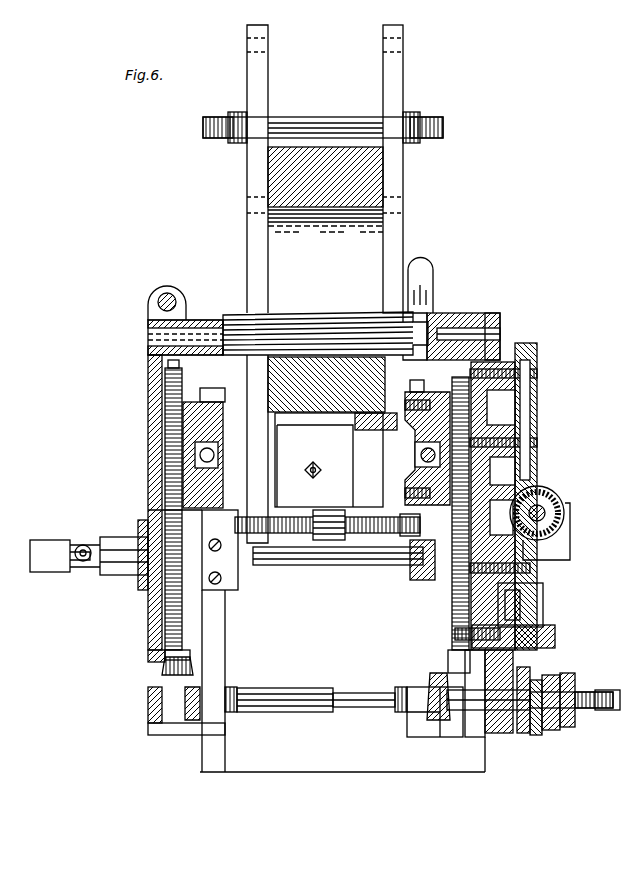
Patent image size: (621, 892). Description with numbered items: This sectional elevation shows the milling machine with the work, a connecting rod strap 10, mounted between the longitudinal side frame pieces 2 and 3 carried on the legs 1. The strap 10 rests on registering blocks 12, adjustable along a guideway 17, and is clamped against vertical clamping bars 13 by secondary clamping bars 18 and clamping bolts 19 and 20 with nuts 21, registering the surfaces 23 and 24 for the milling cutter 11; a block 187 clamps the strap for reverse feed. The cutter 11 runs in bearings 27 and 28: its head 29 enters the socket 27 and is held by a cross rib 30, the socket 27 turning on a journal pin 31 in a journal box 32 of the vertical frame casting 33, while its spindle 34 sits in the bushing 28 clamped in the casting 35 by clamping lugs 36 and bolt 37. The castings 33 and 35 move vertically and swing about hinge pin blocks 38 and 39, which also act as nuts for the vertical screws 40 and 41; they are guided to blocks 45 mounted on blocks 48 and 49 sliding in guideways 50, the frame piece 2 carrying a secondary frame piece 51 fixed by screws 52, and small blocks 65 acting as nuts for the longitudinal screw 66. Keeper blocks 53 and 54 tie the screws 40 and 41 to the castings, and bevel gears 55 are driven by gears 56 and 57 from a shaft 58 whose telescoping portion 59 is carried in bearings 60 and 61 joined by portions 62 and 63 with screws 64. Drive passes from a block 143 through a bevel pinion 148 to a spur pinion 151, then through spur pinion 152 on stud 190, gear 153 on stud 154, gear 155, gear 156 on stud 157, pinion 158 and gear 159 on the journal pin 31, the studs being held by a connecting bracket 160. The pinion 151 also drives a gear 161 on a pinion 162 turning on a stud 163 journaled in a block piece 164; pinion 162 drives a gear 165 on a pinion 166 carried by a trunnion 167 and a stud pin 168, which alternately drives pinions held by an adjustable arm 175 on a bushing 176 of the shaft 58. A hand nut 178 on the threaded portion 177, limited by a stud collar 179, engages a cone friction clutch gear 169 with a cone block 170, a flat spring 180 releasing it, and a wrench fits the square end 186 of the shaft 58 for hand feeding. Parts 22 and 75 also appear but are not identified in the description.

The legs of the framework 1 is at (226, 606).
The longitudinal side frame piece 2 is at (412, 377).
The longitudinal side frame piece 3 is at (215, 425).
The connecting rod strap 10 is at (355, 170).
The milling cutter 11 is at (310, 313).
The registering blocks 12 is at (350, 355).
The vertical clamping bars 13 is at (400, 228).
The guideway 17 is at (352, 492).
The secondary clamping bars 18 is at (256, 180).
The clamping bolts 19 is at (322, 117).
The clamping bolts 20 is at (288, 533).
The nuts 21 is at (238, 112).
The worm 22 is at (332, 540).
The surface to be milled 23 is at (323, 207).
The surface to be milled 24 is at (282, 313).
The bearing socket 27 is at (440, 312).
The bearing bushing 28 is at (200, 320).
The head of the milling cutter 29 is at (425, 280).
The cross rib 30 is at (480, 312).
The journal pin 31 is at (515, 310).
The journal box 32 is at (470, 328).
The vertical frame casting 33 is at (513, 390).
The spindle 34 is at (148, 338).
The casting 35 is at (148, 380).
The clamping lugs 36 is at (165, 285).
The bolt 37 is at (158, 300).
The hinge pin block 38 is at (513, 415).
The hinge pin block 39 is at (182, 452).
The vertical screw 40 is at (453, 605).
The vertical screw 41 is at (182, 622).
The block 45 is at (410, 565).
The block 48 is at (452, 400).
The block 49 is at (162, 406).
The guideways 50 is at (173, 440).
The secondary frame piece 51 is at (372, 430).
The screws 52 is at (408, 398).
The keeper block 53 is at (448, 662).
The keeper block 54 is at (190, 664).
The bevel gears 55 is at (200, 678).
The gear 56 is at (430, 737).
The gear 57 is at (192, 720).
The shaft 58 is at (476, 737).
The telescoping portion 59 is at (303, 712).
The bearing 60 is at (398, 712).
The bearing 61 is at (220, 455).
The connecting portion 62 is at (445, 740).
The connecting portion 63 is at (176, 735).
The screws 64 is at (480, 740).
The small blocks 65 is at (150, 487).
The longitudinal screw 66 is at (405, 485).
The universal joint shaft 75 is at (74, 576).
The block 143 is at (565, 517).
The bevel pinion 148 is at (545, 488).
The spur pinion 151 is at (570, 540).
The spur pinion 152 is at (537, 478).
The gear 153 is at (540, 460).
The stud 154 is at (537, 442).
The spur gear 155 is at (537, 425).
The gear 156 is at (530, 345).
The stud 157 is at (537, 370).
The pinion 158 is at (537, 360).
The gear 159 is at (500, 316).
The connecting bracket 160 is at (513, 398).
The gear 161 is at (445, 588).
The pinion 162 is at (525, 580).
The stud 163 is at (530, 568).
The block piece 164 is at (543, 600).
The gear 165 is at (523, 733).
The pinion 166 is at (520, 618).
The trunnion 167 is at (555, 638).
The stud pin 168 is at (455, 634).
The cone friction clutch gear 169 is at (537, 735).
The cone block 170 is at (552, 730).
The adjustable arm 175 is at (563, 730).
The bushing 176 is at (575, 680).
The threaded portion 177 is at (576, 712).
The hand nut 178 is at (566, 727).
The stud collar 179 is at (316, 686).
The flat spring 180 is at (513, 665).
The square end 186 is at (2, 690).
The block 187 is at (493, 219).
The stud 190 is at (487, 487).